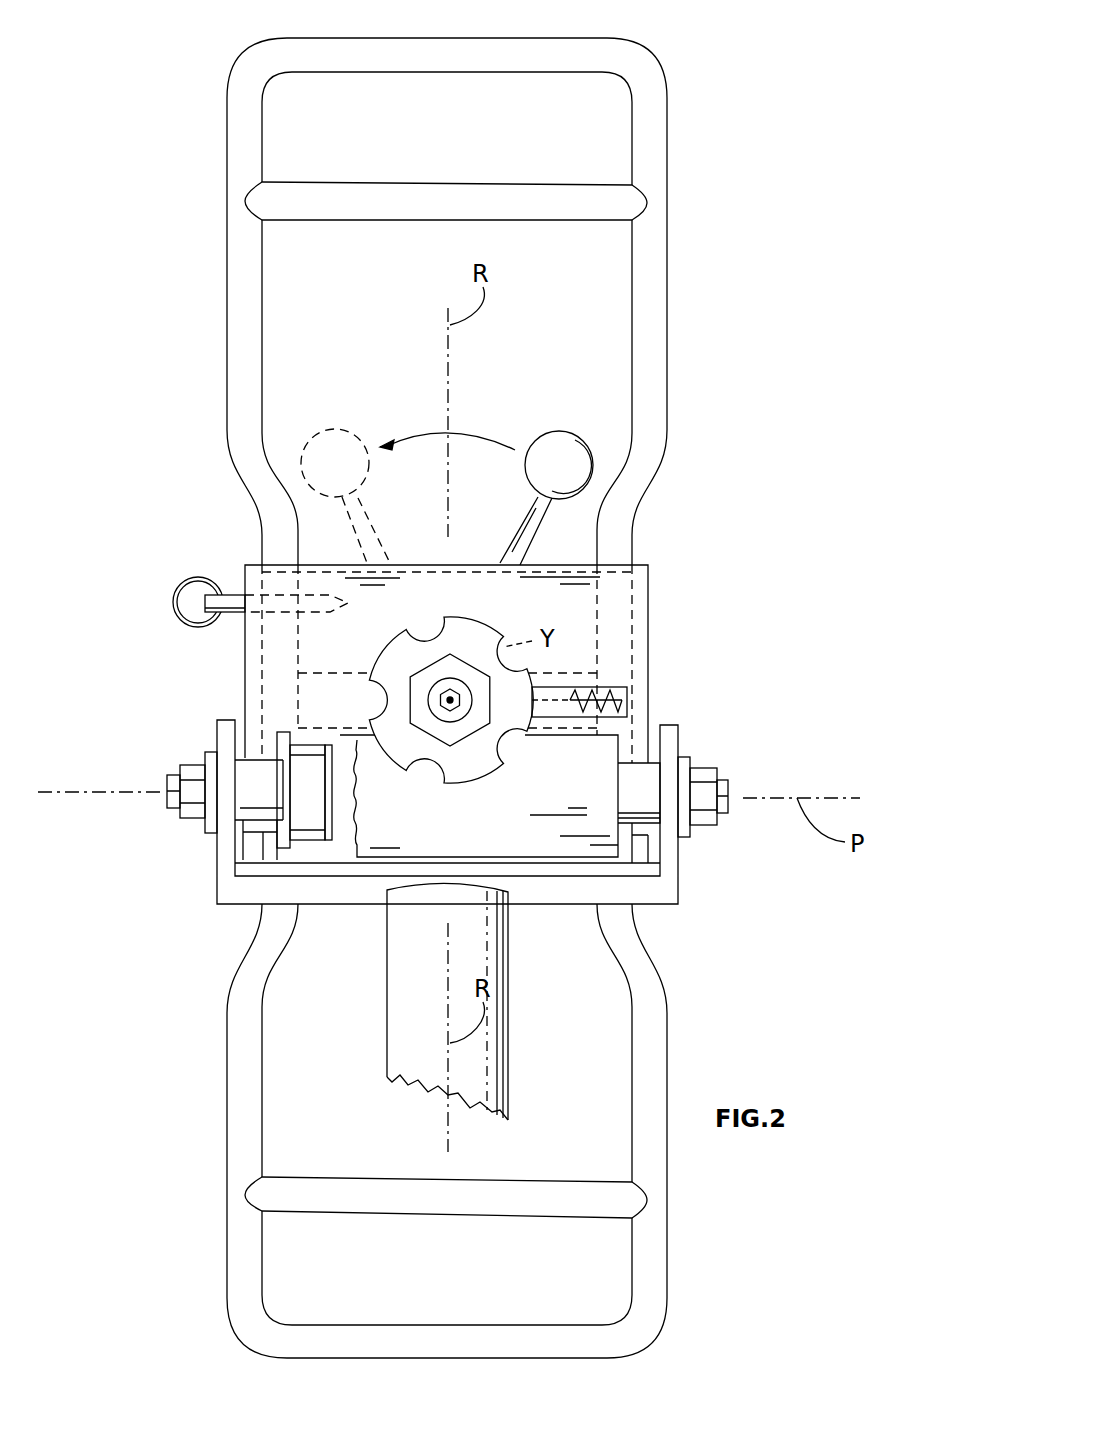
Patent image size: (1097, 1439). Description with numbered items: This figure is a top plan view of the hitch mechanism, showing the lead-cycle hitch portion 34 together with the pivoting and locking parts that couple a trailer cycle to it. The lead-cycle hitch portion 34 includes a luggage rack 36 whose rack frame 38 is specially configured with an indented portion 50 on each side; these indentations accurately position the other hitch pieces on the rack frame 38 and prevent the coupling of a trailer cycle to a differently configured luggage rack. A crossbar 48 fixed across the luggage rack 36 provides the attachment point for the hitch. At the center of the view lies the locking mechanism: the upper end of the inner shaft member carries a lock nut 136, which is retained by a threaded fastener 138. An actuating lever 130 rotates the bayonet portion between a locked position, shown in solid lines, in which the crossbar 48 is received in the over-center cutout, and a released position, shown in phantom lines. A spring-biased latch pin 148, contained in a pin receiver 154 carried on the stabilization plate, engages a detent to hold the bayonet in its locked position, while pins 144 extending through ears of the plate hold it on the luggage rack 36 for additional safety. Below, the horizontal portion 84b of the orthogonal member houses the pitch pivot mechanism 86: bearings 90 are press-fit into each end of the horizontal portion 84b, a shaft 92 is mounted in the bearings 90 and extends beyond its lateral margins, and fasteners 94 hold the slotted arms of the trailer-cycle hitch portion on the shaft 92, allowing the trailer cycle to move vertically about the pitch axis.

The lead-cycle hitch portion 34 is at (727, 201).
The luggage rack 36 is at (670, 98).
The rack frame 38 is at (653, 392).
The indented portion 50 is at (270, 520).
The actuating lever 130 is at (335, 428).
The pin 144 is at (232, 612).
The crossbar 48 is at (323, 673).
The lock nut 136 is at (472, 688).
The threaded fastener 138 is at (457, 723).
The pin receiver 154 is at (610, 687).
The latch pin 148 is at (626, 700).
The horizontal portion 84b is at (479, 796).
The shaft 92 is at (248, 807).
The bearing 90 is at (310, 833).
The pitch pivot mechanism 86 is at (751, 764).
The fastener 94 is at (190, 760).